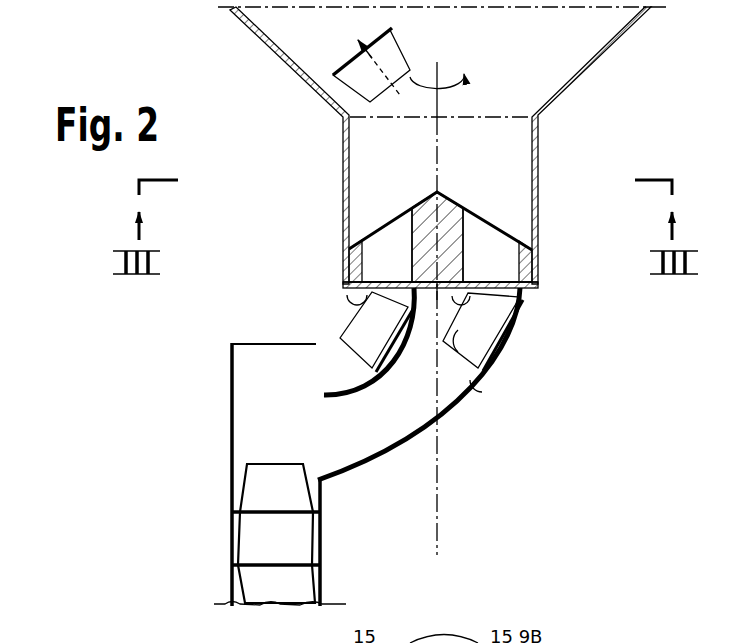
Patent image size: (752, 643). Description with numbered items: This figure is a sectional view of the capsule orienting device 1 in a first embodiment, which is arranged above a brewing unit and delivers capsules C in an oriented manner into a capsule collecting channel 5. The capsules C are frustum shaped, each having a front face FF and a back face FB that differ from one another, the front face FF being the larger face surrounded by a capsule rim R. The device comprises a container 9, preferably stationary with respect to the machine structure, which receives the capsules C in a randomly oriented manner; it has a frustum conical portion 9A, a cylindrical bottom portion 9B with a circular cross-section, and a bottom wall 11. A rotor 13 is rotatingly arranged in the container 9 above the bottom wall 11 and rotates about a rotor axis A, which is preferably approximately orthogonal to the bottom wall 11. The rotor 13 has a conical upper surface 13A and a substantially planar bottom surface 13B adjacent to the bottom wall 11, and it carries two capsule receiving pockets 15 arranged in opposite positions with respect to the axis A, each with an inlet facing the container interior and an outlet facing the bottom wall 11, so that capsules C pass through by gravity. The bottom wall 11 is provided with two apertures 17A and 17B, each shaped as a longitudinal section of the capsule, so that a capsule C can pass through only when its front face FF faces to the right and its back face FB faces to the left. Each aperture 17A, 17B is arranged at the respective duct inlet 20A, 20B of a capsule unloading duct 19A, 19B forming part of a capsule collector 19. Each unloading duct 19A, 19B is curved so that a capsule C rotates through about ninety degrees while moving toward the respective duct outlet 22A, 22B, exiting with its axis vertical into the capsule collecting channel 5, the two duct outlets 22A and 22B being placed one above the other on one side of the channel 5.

The capsule orienting device 1 is at (503, 98).
The capsule collecting channel 5 is at (245, 447).
The container 9 is at (440, 145).
The frustum conical portion 9A is at (546, 97).
The cylindrical bottom portion 9B is at (342, 222).
The bottom wall 11 is at (426, 300).
The rotor 13 is at (440, 217).
The conical upper surface 13A is at (450, 195).
The planar bottom surface 13B is at (483, 291).
The capsule receiving pocket 15 is at (394, 245).
The aperture 17A is at (355, 305).
The aperture 17B is at (537, 262).
The capsule collector 19 is at (447, 447).
The capsule unloading duct 19A is at (333, 341).
The capsule unloading duct 19B is at (418, 447).
The duct inlet 20A is at (420, 292).
The duct inlet 20B is at (525, 300).
The duct outlet 22A is at (325, 394).
The duct outlet 22B is at (317, 437).
The rotor axis A is at (437, 316).
The capsule C is at (253, 495).
The back face FB is at (352, 320).
The front face FF is at (393, 375).
The capsule rim R is at (474, 385).